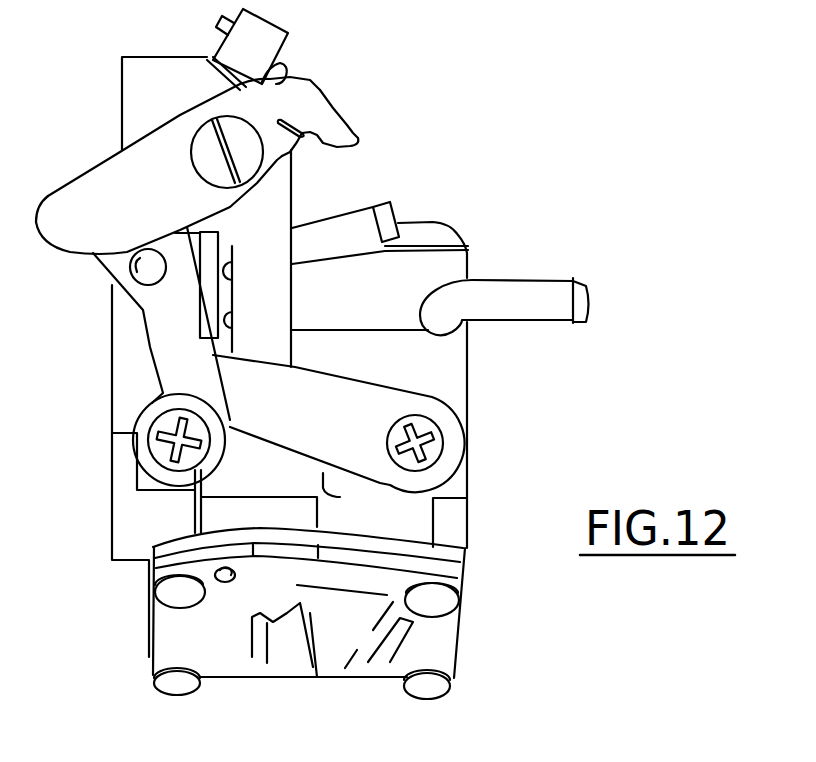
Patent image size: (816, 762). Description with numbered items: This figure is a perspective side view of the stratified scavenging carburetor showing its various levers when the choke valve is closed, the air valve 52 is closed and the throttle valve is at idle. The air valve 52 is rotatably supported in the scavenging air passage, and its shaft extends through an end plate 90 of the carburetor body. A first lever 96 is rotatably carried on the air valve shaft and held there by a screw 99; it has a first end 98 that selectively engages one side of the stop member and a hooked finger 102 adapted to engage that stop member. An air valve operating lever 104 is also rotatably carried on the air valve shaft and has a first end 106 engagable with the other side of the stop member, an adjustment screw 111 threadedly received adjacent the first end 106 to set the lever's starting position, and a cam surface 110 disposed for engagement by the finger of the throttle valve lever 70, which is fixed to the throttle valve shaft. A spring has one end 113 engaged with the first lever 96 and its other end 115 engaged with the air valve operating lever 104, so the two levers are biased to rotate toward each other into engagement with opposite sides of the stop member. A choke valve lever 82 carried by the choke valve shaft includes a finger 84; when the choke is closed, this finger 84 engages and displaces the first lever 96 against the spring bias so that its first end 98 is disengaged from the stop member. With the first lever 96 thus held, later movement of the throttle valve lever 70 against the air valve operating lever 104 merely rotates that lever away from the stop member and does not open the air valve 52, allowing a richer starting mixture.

The air valve 52 is at (310, 645).
The throttle valve lever 70 is at (363, 390).
The choke valve lever 82 is at (153, 298).
The finger 84 is at (130, 267).
The end plate 90 is at (122, 353).
The first lever 96 is at (110, 170).
The first end 98 is at (333, 80).
The screw 99 is at (206, 172).
The hooked finger 102 is at (358, 138).
The air valve operating lever 104 is at (281, 197).
The first end 106 is at (280, 20).
The cam surface 110 is at (233, 297).
The adjustment screw 111 is at (283, 63).
The spring end 113 is at (290, 128).
The spring end 115 is at (212, 86).